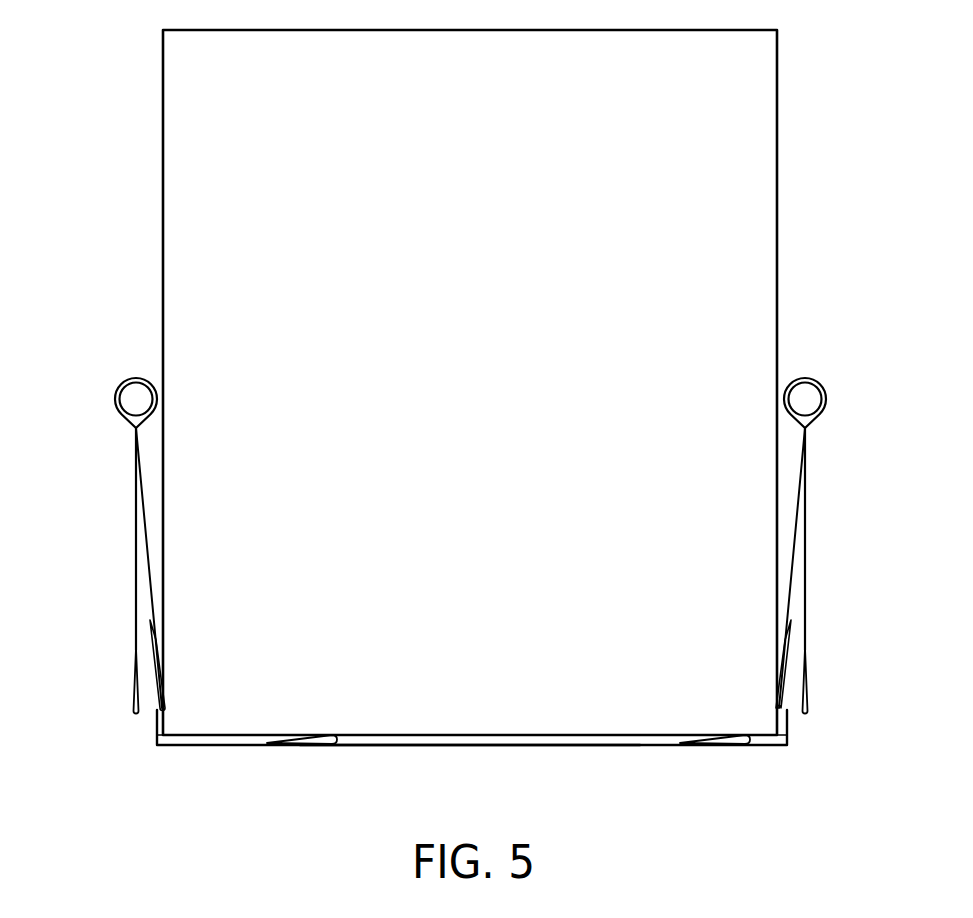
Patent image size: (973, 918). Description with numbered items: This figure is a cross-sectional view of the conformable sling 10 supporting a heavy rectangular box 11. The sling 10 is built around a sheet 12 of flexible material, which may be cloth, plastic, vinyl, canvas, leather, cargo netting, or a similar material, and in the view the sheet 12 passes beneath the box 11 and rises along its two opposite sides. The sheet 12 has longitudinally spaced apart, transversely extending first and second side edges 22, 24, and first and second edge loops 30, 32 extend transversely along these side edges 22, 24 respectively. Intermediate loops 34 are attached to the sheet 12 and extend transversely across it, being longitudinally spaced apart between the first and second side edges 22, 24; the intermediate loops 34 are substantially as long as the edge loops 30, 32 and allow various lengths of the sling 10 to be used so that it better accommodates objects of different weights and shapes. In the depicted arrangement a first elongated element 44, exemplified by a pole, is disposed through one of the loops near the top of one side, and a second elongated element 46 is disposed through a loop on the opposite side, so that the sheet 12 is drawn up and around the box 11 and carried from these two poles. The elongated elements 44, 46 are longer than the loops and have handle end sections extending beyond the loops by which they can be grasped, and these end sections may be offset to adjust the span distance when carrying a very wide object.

The conformable sling 10 is at (600, 746).
The rectangular box 11 is at (770, 180).
The sheet 12 is at (427, 746).
The first side edge 22 is at (137, 650).
The second side edge 24 is at (806, 650).
The first edge loop 30 is at (130, 695).
The second edge loop 32 is at (810, 695).
The intermediate loops 34 is at (300, 746).
The first elongated element 44 is at (135, 388).
The second elongated element 46 is at (806, 388).